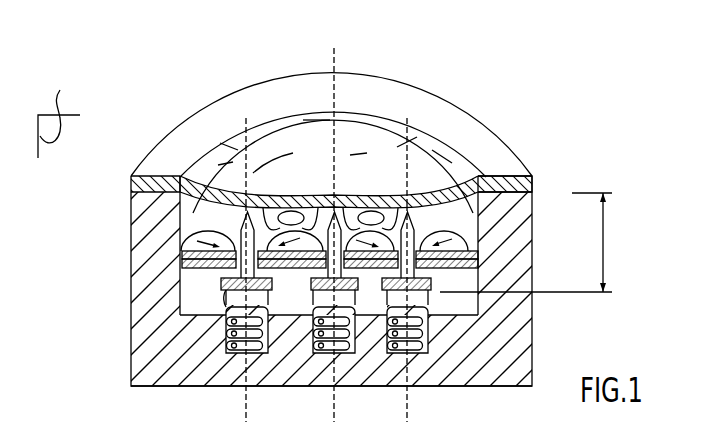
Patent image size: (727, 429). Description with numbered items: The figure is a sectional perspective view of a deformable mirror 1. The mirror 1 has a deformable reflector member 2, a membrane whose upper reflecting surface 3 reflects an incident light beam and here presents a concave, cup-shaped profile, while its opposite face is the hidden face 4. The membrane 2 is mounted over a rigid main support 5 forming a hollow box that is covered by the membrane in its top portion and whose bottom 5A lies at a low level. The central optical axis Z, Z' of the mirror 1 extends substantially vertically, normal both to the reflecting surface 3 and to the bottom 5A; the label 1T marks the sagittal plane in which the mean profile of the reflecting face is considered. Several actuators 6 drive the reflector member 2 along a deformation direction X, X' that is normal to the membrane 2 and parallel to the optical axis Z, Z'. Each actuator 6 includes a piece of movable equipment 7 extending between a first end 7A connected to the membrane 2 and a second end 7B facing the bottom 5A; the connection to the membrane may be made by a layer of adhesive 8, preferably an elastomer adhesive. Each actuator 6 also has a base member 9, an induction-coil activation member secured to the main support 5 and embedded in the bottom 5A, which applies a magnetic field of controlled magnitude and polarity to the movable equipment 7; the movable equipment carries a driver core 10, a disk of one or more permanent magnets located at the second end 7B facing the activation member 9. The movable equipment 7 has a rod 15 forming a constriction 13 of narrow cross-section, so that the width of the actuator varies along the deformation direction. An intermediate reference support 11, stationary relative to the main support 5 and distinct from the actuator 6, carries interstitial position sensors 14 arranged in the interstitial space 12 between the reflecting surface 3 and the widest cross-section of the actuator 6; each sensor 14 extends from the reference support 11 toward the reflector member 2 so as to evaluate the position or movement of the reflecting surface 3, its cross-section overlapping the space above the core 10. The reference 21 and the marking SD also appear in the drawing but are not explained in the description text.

The deformable mirror 1 is at (511, 107).
The section indicator 1T is at (59, 117).
The deformable reflector member 2 is at (420, 140).
The reflecting surface 3 is at (355, 137).
The hidden face 4 is at (460, 195).
The main support 5 is at (510, 252).
The bottom of the box 5A is at (468, 377).
The actuator 6 is at (238, 300).
The piece of movable equipment 7 is at (222, 288).
The first end 7A is at (180, 177).
The second end 7B is at (232, 296).
The layer of adhesive 8 is at (233, 203).
The activation member 9 is at (231, 352).
The driver core 10 is at (446, 305).
The intermediate reference support 11 is at (230, 262).
The interstitial space 12 is at (610, 244).
The constriction 13 is at (372, 195).
The interstitial position sensor 14 is at (293, 197).
The rod 15 is at (225, 268).
The electrode 21 is at (307, 203).
The distance SD is at (366, 292).
The deformation direction X is at (320, 315).
The deformation direction X' is at (314, 151).
The central optical axis Z is at (340, 315).
The central optical axis Z' is at (343, 117).